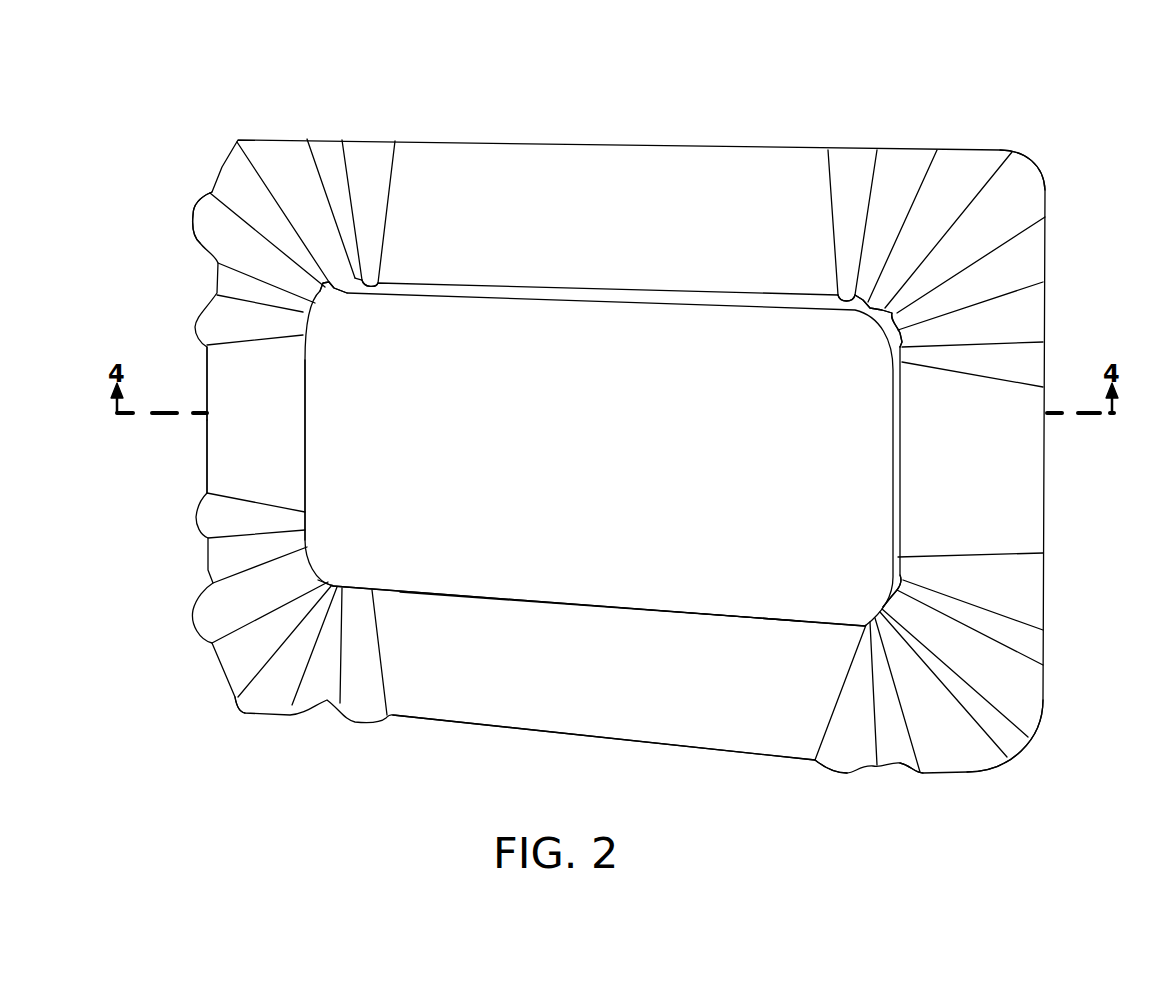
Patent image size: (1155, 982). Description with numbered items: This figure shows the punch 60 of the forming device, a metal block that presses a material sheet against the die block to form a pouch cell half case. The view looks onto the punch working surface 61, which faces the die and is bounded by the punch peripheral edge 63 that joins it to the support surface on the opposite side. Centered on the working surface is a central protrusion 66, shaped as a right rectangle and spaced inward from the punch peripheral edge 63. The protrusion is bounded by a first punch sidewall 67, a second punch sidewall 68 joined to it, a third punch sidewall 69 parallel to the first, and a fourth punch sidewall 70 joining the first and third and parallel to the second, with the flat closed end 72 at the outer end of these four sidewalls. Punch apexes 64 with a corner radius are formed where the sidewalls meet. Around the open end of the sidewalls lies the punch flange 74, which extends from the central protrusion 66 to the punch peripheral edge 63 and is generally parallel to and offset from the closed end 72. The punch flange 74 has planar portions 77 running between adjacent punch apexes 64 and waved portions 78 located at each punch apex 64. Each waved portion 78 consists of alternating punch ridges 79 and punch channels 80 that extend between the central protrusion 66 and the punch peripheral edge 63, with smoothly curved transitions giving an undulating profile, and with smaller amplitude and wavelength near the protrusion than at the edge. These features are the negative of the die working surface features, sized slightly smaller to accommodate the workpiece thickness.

The punch 60 is at (293, 108).
The punch working surface 61 is at (213, 445).
The punch peripheral edge 63 is at (207, 395).
The punch apex 64 is at (330, 289).
The central protrusion 66 is at (618, 470).
The first punch sidewall 67 is at (668, 300).
The second punch sidewall 68 is at (895, 458).
The third punch sidewall 69 is at (727, 622).
The fourth punch sidewall 70 is at (303, 453).
The closed end 72 is at (618, 470).
The punch flange 74 is at (420, 708).
The planar portion 77 is at (495, 153).
The waved portion 78 is at (1035, 185).
The punch ridge 79 is at (203, 222).
The punch channel 80 is at (228, 185).